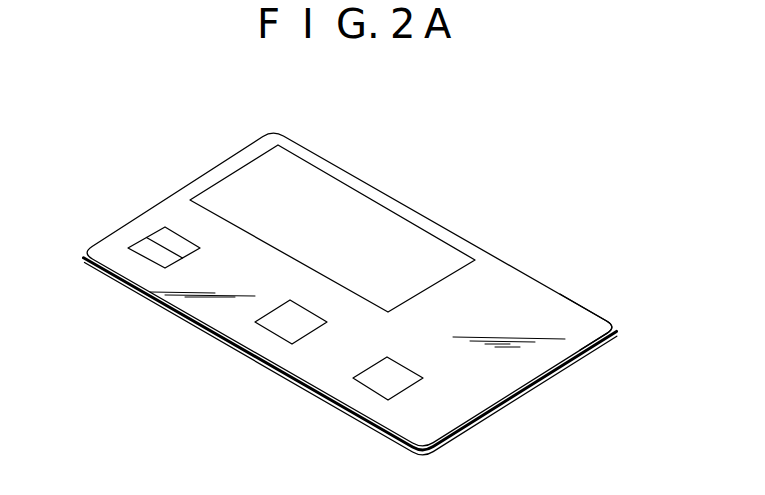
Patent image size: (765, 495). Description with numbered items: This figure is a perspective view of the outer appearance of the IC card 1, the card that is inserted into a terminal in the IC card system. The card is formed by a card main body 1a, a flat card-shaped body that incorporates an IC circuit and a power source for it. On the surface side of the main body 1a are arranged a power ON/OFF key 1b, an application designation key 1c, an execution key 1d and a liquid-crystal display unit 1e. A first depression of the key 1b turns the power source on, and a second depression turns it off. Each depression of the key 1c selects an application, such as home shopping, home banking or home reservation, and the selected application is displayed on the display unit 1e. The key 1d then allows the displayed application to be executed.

The IC card 1 is at (520, 206).
The card main body 1a is at (585, 318).
The power ON/OFF key 1b is at (128, 248).
The application designation key 1c is at (285, 328).
The execution key 1d is at (375, 383).
The liquid-crystal display unit 1e is at (335, 195).